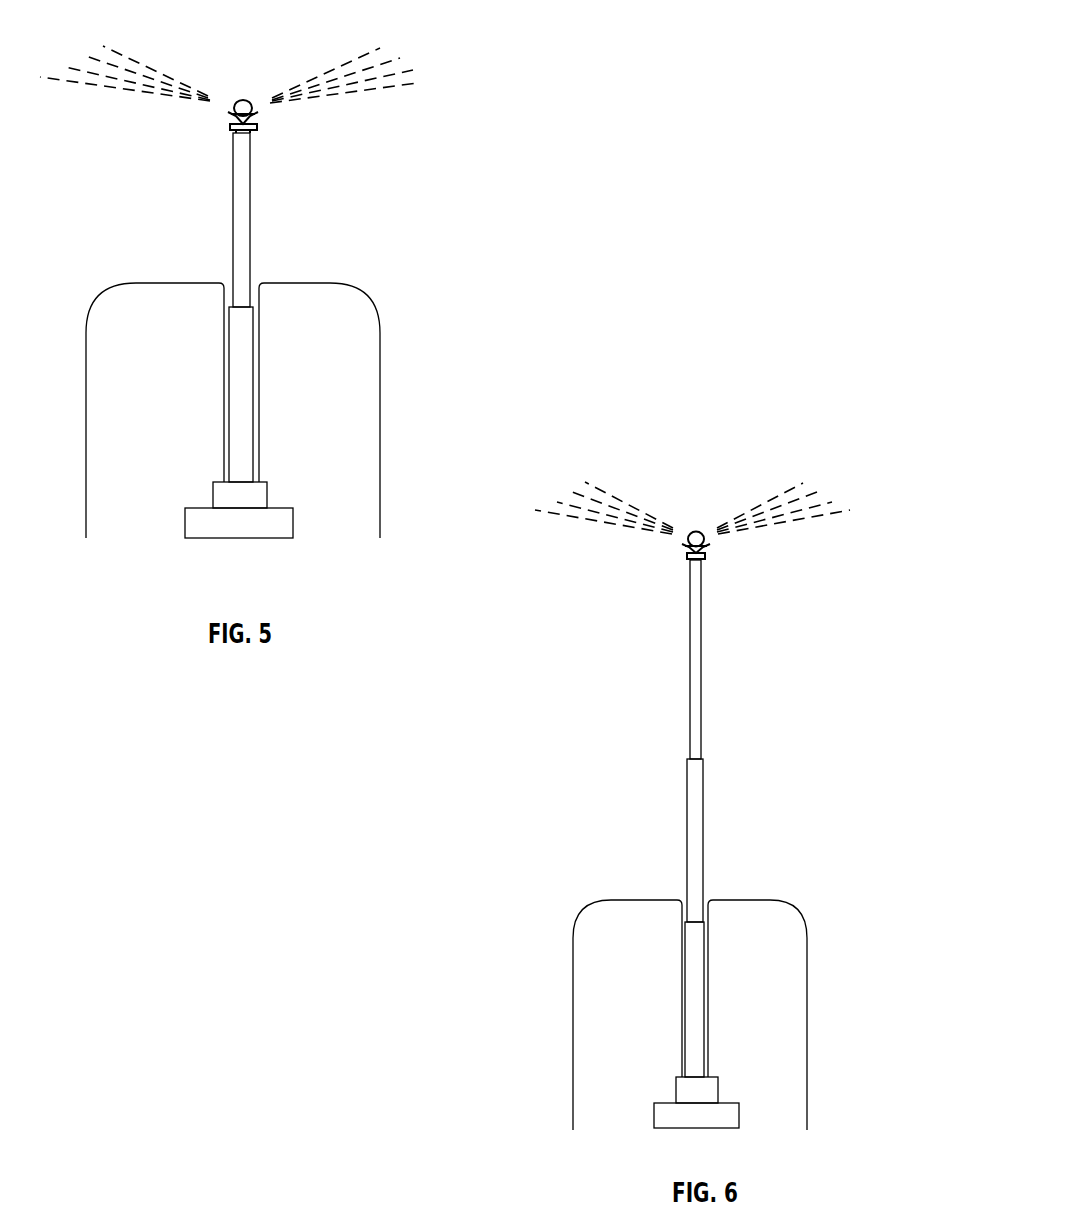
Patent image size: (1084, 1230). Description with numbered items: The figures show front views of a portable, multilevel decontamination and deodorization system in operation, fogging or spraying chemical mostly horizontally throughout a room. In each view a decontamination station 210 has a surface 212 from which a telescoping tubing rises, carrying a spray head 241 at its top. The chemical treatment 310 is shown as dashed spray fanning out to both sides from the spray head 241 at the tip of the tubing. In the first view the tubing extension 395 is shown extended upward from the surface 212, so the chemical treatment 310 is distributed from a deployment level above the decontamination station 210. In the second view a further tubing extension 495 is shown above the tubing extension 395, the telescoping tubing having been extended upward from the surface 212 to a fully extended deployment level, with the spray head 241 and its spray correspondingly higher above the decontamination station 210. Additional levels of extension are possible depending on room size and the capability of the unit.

In FIG. 5, the spray nozzle 241 is at (243, 100).
In FIG. 6, the spray nozzle 241 is at (696, 530).
In FIG. 5, the chemical treatment 310 is at (430, 81).
In FIG. 6, the chemical treatment 310 is at (783, 523).
In FIG. 5, the tubing extensions 395 is at (243, 188).
In FIG. 6, the tubing extensions 395 is at (693, 795).
In FIG. 6, the tubing extensions 495 is at (690, 680).
In FIG. 5, the surface 212 is at (207, 276).
In FIG. 6, the surface 212 is at (668, 895).
In FIG. 5, the decontamination station 210 is at (380, 362).
In FIG. 6, the decontamination station 210 is at (572, 930).